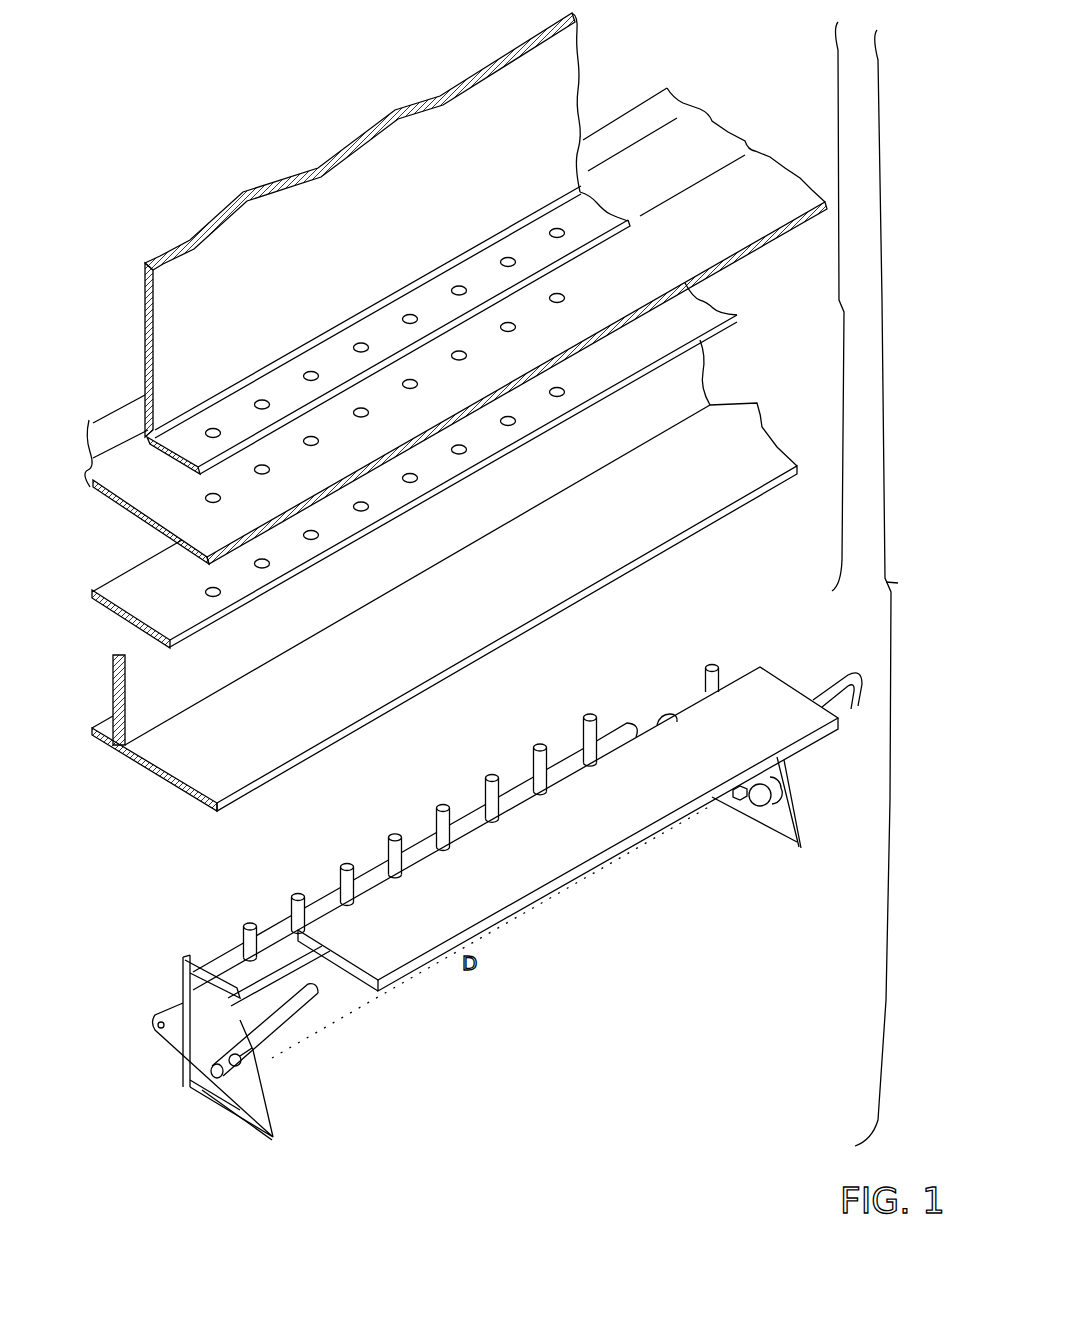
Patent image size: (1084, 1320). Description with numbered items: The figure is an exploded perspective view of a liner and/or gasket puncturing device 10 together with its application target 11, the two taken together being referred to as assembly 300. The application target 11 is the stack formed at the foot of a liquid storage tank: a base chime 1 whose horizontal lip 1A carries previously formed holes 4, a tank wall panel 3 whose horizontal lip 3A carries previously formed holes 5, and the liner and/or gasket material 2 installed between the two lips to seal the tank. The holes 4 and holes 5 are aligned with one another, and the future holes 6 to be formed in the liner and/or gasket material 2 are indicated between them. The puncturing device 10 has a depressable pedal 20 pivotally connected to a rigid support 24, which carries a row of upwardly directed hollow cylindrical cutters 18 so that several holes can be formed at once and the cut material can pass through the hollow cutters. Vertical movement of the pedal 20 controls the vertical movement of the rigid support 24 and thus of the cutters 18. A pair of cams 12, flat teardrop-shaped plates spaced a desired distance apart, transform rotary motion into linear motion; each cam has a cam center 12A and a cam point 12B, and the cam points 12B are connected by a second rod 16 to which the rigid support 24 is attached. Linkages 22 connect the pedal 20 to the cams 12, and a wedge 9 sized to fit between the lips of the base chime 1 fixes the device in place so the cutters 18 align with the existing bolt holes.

The base chime 1 is at (222, 775).
The horizontal lip of the base chime 1A is at (167, 643).
The liner and/or gasket material 2 is at (213, 540).
The tank wall panel 3 is at (250, 329).
The horizontal lip of the wall panel 3A is at (172, 451).
The holes 4 is at (215, 588).
The holes 5 is at (215, 428).
The future holes 6 is at (568, 293).
The wedge 9 is at (240, 1128).
The liner and/or gasket puncturing device 10 is at (432, 752).
The application target 11 is at (861, 584).
The cams 12 is at (180, 1043).
The cam center 12A is at (197, 1093).
The cam point 12B is at (153, 1018).
The second rod 16 is at (178, 1002).
The hollow cylindrical cutters 18 is at (538, 745).
The depressable pedal 20 is at (612, 816).
The linkages 22 is at (290, 1047).
The rigid support 24 is at (635, 732).
The application target and puncturing device assembly 300 is at (910, 583).